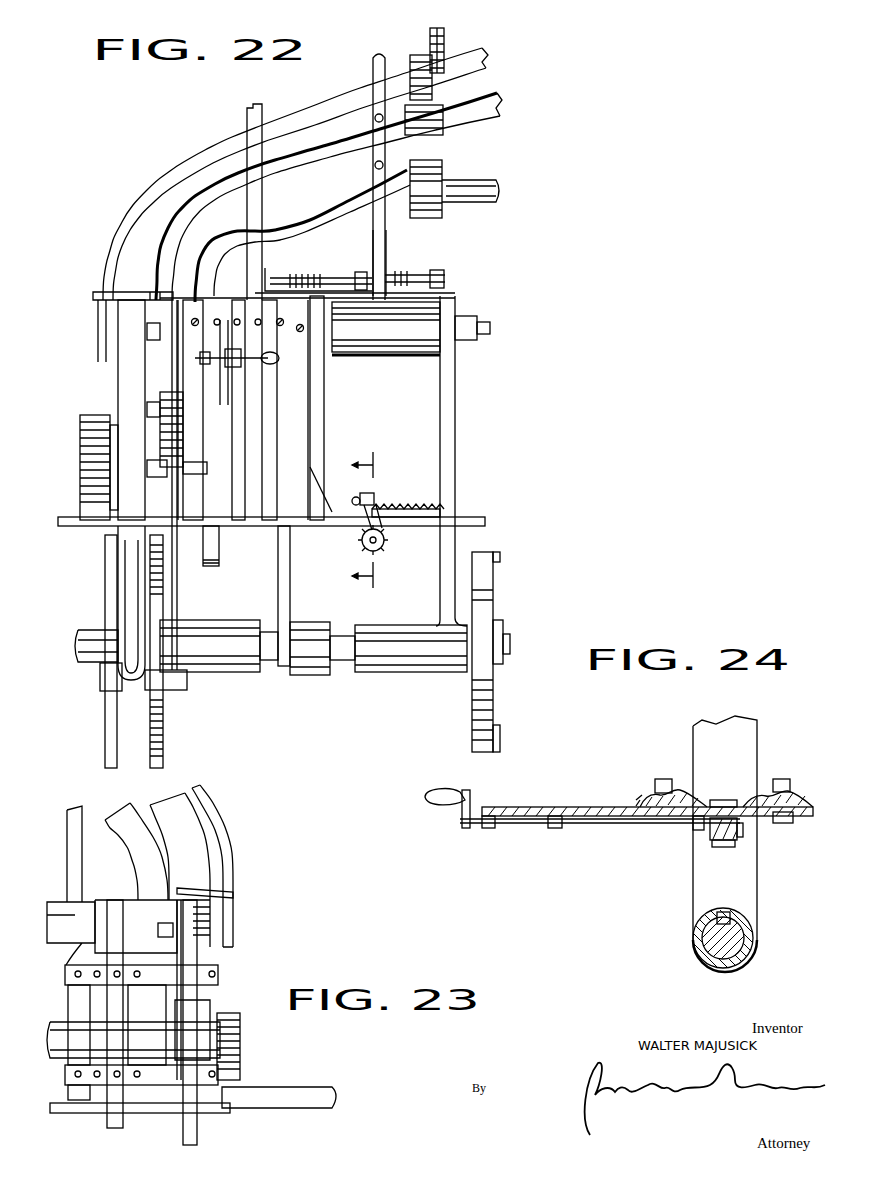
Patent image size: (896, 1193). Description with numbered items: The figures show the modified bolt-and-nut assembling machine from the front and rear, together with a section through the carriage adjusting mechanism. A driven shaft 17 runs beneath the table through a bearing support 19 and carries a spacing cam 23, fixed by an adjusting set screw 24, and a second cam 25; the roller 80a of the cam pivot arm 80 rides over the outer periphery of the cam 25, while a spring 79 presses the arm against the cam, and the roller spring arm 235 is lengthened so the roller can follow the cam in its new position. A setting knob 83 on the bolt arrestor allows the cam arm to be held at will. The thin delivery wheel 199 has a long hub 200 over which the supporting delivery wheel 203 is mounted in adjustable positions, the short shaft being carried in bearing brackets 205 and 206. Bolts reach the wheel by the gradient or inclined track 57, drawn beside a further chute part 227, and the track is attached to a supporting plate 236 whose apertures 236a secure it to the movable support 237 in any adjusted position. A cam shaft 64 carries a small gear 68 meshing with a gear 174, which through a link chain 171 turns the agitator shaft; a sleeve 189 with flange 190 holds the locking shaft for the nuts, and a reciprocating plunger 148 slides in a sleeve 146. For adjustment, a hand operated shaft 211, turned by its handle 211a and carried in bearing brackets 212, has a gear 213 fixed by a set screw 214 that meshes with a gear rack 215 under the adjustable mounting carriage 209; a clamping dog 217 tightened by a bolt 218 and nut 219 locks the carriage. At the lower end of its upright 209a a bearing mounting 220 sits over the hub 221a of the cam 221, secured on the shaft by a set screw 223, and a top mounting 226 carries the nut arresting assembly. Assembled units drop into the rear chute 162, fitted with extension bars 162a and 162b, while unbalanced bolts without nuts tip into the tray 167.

In FIG. 22, the driven shaft 17 is at (337, 640).
In FIG. 24, the driven shaft 17 is at (706, 950).
In FIG. 22, the bearing support 19 is at (290, 585).
In FIG. 24, the bearing support 19 is at (752, 872).
In FIG. 22, the spacing cam 23 is at (164, 735).
In FIG. 22, the adjusting set screw 24 is at (374, 521).
In FIG. 22, the second cam 25 is at (108, 713).
In FIG. 22, the gradient or inclined track 57 is at (297, 160).
In FIG. 22, the cam shaft 64 is at (466, 186).
In FIG. 22, the small gear 68 is at (425, 210).
In FIG. 22, the spring 79 is at (135, 590).
In FIG. 22, the cam pivot arm 80 is at (178, 590).
In FIG. 22, the roller 80a is at (103, 689).
In FIG. 22, the setting knob 83 is at (258, 364).
In FIG. 22, the sleeve 146 is at (395, 363).
In FIG. 22, the reciprocating plunger 148 is at (482, 318).
In FIG. 23, the chute 162 is at (170, 1008).
In FIG. 23, the extension bar 162a is at (206, 980).
In FIG. 23, the extension bar 162b is at (206, 1076).
In FIG. 23, the tray 167 is at (250, 1095).
In FIG. 22, the link chain 171 is at (440, 46).
In FIG. 22, the gear 174 is at (424, 58).
In FIG. 22, the sleeve 189 is at (420, 277).
In FIG. 22, the flange 190 is at (395, 282).
In FIG. 22, the delivery wheel 199 is at (128, 380).
In FIG. 23, the delivery wheel 199 is at (197, 1128).
In FIG. 22, the long hub 200 is at (184, 418).
In FIG. 22, the supporting delivery wheel 203 is at (213, 546).
In FIG. 23, the supporting delivery wheel 203 is at (112, 1118).
In FIG. 22, the bearing bracket 205 is at (98, 432).
In FIG. 23, the bearing bracket 205 is at (236, 1037).
In FIG. 22, the bearing bracket 206 is at (258, 443).
In FIG. 22, the adjustable mounting carriage 209 is at (324, 462).
In FIG. 24, the adjustable mounting carriage 209 is at (750, 742).
In FIG. 22, the upright 209a is at (455, 480).
In FIG. 24, the hand operated shaft 211 is at (590, 822).
In FIG. 24, the handle 211a is at (448, 798).
In FIG. 24, the bearing bracket 212 is at (488, 826).
In FIG. 24, the gear 213 is at (713, 840).
In FIG. 24, the set screw 214 is at (744, 838).
In FIG. 22, the gear rack 215 is at (442, 522).
In FIG. 22, the clamping dog 217 is at (360, 499).
In FIG. 24, the clamping dog 217 is at (648, 795).
In FIG. 22, the bolt 218 is at (376, 503).
In FIG. 24, the bolt 218 is at (663, 780).
In FIG. 24, the nut 219 is at (684, 792).
In FIG. 22, the bearing mounting 220 is at (387, 630).
In FIG. 24, the bearing mounting 220 is at (752, 936).
In FIG. 22, the cam 221 is at (485, 583).
In FIG. 24, the hub 221a is at (756, 960).
In FIG. 24, the set screw 223 is at (733, 900).
In FIG. 22, the top mounting 226 is at (386, 236).
In FIG. 22, the lower chute 227 is at (350, 220).
In FIG. 22, the roller spring arm 235 is at (168, 690).
In FIG. 22, the supporting plate 236 is at (208, 312).
In FIG. 22, the apertures 236a is at (248, 330).
In FIG. 22, the movable support 237 is at (298, 411).